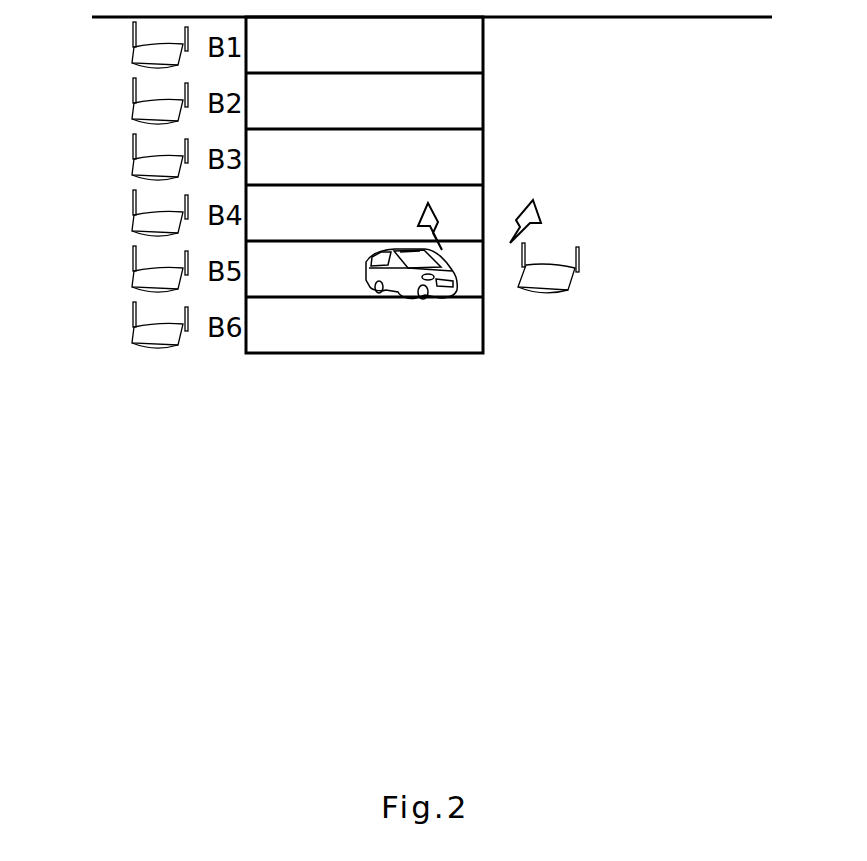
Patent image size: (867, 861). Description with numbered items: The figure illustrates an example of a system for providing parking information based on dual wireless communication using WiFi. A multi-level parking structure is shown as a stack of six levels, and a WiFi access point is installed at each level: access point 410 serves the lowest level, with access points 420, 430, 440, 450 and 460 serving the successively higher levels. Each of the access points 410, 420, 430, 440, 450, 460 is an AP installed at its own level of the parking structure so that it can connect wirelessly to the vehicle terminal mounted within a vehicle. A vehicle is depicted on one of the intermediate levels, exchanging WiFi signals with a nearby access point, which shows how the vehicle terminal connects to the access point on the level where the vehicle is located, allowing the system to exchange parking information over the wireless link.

The access point 410 is at (114, 325).
The access point 420 is at (114, 269).
The access point 430 is at (114, 213).
The access point 440 is at (114, 157).
The access point 450 is at (114, 101).
The access point 460 is at (133, 48).